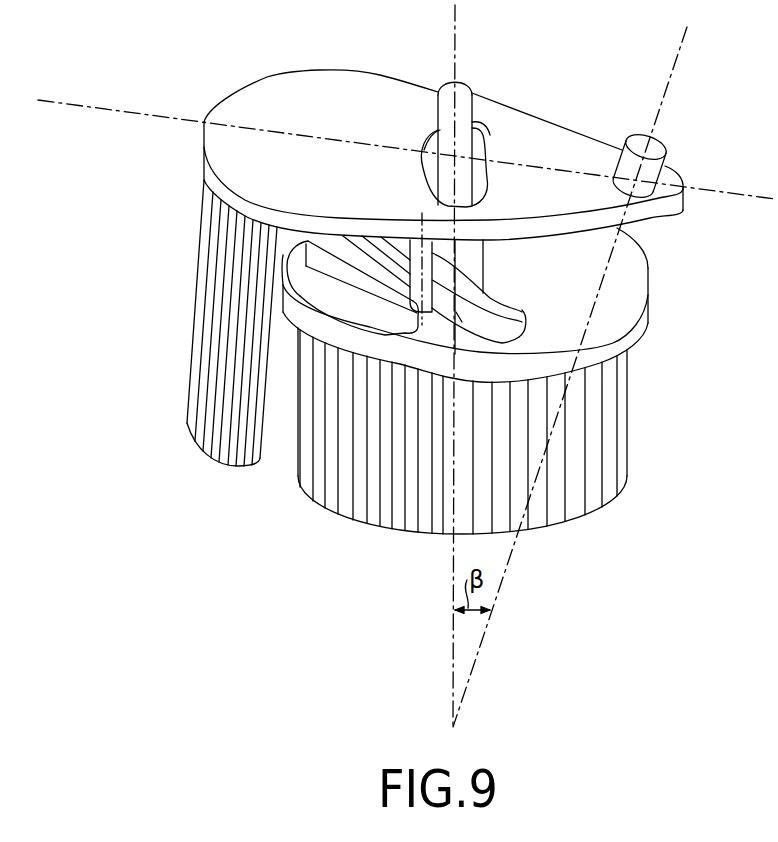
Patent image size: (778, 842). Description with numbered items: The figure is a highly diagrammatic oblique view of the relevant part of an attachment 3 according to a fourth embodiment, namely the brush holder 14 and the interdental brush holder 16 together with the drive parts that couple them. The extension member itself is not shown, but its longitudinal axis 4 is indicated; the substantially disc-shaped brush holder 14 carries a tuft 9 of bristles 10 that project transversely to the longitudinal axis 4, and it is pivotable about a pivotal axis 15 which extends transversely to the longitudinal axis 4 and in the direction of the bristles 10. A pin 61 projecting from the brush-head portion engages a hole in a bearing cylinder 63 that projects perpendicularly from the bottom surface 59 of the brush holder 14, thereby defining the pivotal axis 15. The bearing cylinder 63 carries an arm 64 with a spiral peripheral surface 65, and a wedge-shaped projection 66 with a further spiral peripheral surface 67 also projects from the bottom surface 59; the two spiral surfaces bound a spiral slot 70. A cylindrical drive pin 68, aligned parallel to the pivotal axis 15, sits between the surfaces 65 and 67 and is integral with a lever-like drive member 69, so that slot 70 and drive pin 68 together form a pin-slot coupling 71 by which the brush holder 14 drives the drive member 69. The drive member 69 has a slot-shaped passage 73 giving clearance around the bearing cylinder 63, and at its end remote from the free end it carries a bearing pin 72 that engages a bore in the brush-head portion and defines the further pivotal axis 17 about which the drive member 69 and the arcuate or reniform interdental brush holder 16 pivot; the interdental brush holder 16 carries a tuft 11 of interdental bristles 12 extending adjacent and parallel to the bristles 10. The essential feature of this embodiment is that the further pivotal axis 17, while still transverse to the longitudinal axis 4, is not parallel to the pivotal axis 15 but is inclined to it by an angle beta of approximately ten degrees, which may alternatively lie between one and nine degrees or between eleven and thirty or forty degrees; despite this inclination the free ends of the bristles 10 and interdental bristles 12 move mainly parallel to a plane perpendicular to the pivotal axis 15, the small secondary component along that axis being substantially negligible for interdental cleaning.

The attachment 3 is at (315, 593).
The longitudinal axis 4 is at (127, 112).
The tuft of bristles 9 is at (580, 520).
The bristles 10 is at (617, 437).
The tuft of interdental bristles 11 is at (212, 461).
The interdental bristles 12 is at (218, 384).
The brush holder 14 is at (649, 293).
The pivotal axis 15 is at (456, 60).
The interdental brush holder 16 is at (238, 105).
The further pivotal axis 17 is at (669, 82).
The bottom surface 59 is at (632, 273).
The pin 61 is at (470, 90).
The bearing cylinder 63 is at (480, 251).
The arm 64 is at (505, 311).
The peripheral surface 65 is at (460, 318).
The wedge-shaped projection 66 is at (327, 250).
The peripheral surface 67 is at (348, 246).
The drive pin 68 is at (399, 243).
The drive member 69 is at (556, 140).
The slot 70 is at (371, 255).
The pin-slot coupling 71 is at (433, 322).
The bearing pin 72 is at (651, 133).
The slot-shaped passage 73 is at (478, 181).